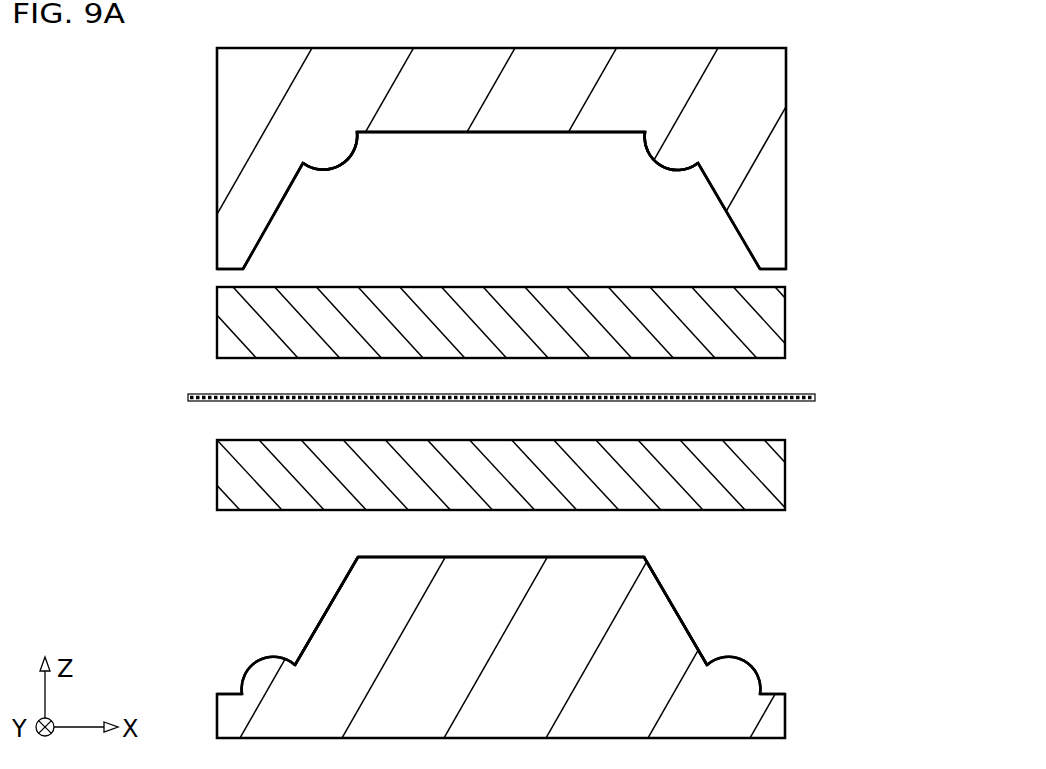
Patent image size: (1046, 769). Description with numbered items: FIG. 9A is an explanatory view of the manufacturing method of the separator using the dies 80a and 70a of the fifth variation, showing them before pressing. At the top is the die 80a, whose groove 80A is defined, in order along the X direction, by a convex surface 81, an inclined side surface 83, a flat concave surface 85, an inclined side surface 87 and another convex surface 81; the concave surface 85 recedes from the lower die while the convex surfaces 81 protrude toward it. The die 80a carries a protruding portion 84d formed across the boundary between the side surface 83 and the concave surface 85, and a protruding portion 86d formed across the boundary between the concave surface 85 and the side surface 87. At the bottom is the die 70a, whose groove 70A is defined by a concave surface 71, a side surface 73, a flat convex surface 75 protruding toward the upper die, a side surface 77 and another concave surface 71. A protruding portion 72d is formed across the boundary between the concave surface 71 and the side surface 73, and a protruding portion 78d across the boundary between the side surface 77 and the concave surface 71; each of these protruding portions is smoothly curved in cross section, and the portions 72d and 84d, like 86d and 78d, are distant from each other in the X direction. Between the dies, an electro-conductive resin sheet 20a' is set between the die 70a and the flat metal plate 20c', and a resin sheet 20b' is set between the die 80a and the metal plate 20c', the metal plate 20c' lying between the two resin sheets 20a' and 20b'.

The die 80a is at (800, 110).
The convex surface 81 is at (234, 270).
The side surface 83 is at (286, 196).
The protruding portion 84d is at (347, 160).
The concave surface 85 is at (501, 133).
The groove 80A is at (599, 198).
The protruding portion 86d is at (659, 163).
The side surface 87 is at (714, 190).
The resin sheet 20b' is at (529, 305).
The metal plate 20c' is at (551, 394).
The resin sheet 20a' is at (521, 467).
The die 70a is at (800, 698).
The concave surface 71 is at (242, 693).
The protruding portion 72d is at (273, 658).
The side surface 73 is at (327, 610).
The convex surface 75 is at (617, 556).
The side surface 77 is at (680, 615).
The protruding portion 78d is at (736, 658).
The groove 70A is at (232, 596).